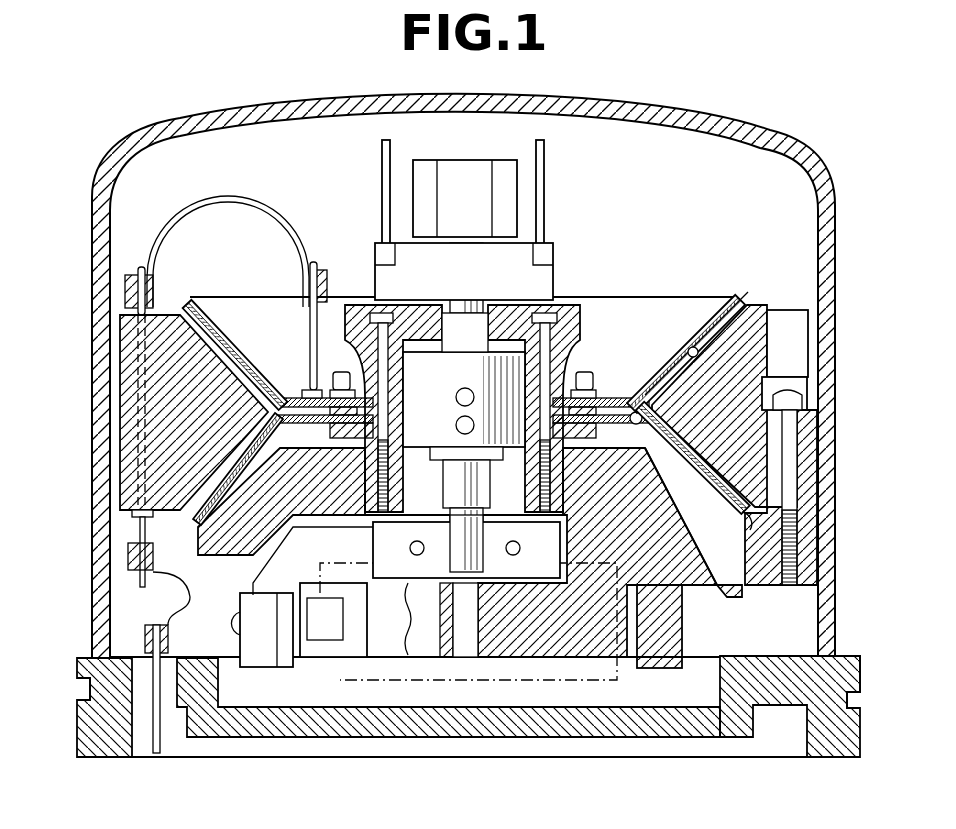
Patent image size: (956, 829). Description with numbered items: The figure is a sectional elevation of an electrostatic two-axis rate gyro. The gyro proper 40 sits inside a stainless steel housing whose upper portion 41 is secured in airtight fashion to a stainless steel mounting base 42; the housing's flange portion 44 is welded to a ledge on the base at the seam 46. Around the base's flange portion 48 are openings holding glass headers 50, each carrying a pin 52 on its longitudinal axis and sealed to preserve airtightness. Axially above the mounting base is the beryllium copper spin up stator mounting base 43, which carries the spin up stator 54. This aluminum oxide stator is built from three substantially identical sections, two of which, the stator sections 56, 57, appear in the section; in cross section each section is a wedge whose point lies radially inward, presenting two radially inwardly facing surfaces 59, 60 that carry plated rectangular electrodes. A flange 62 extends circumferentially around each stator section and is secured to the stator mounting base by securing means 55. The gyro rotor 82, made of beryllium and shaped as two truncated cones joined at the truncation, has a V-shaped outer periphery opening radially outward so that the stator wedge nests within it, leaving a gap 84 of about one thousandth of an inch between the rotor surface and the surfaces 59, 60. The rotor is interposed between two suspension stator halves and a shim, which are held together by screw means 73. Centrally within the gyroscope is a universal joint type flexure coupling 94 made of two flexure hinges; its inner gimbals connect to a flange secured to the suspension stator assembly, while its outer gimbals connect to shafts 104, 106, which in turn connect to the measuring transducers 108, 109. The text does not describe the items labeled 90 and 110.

The gyro proper 40 is at (797, 128).
The upper portion of housing 41 is at (840, 549).
The mounting base 42 is at (818, 752).
The spin up stator mounting base 43 is at (720, 587).
The flange portion 44 is at (847, 650).
The seam 46 is at (83, 677).
The flange portion of base 48 is at (807, 423).
The glass header 50 is at (148, 700).
The pin 52 is at (158, 755).
The spin up stator 54 is at (758, 318).
The securing means 55 is at (790, 470).
The spin up stator section 56 is at (227, 352).
The spin up stator section 57 is at (687, 447).
The radially inwardly facing surface 59 is at (697, 357).
The radially inwardly facing surface 60 is at (702, 467).
The flange 62 is at (270, 200).
The screw means 73 is at (340, 374).
The gyro rotor 82 is at (730, 330).
The gap 84 is at (668, 368).
The pin 90 is at (636, 412).
The universal joint type flexure coupling 94 is at (487, 373).
The shaft 104 is at (483, 278).
The shaft 106 is at (453, 557).
The measuring transducer 108 is at (547, 168).
The measuring transducer 109 is at (427, 608).
The support pillar 110 is at (633, 660).